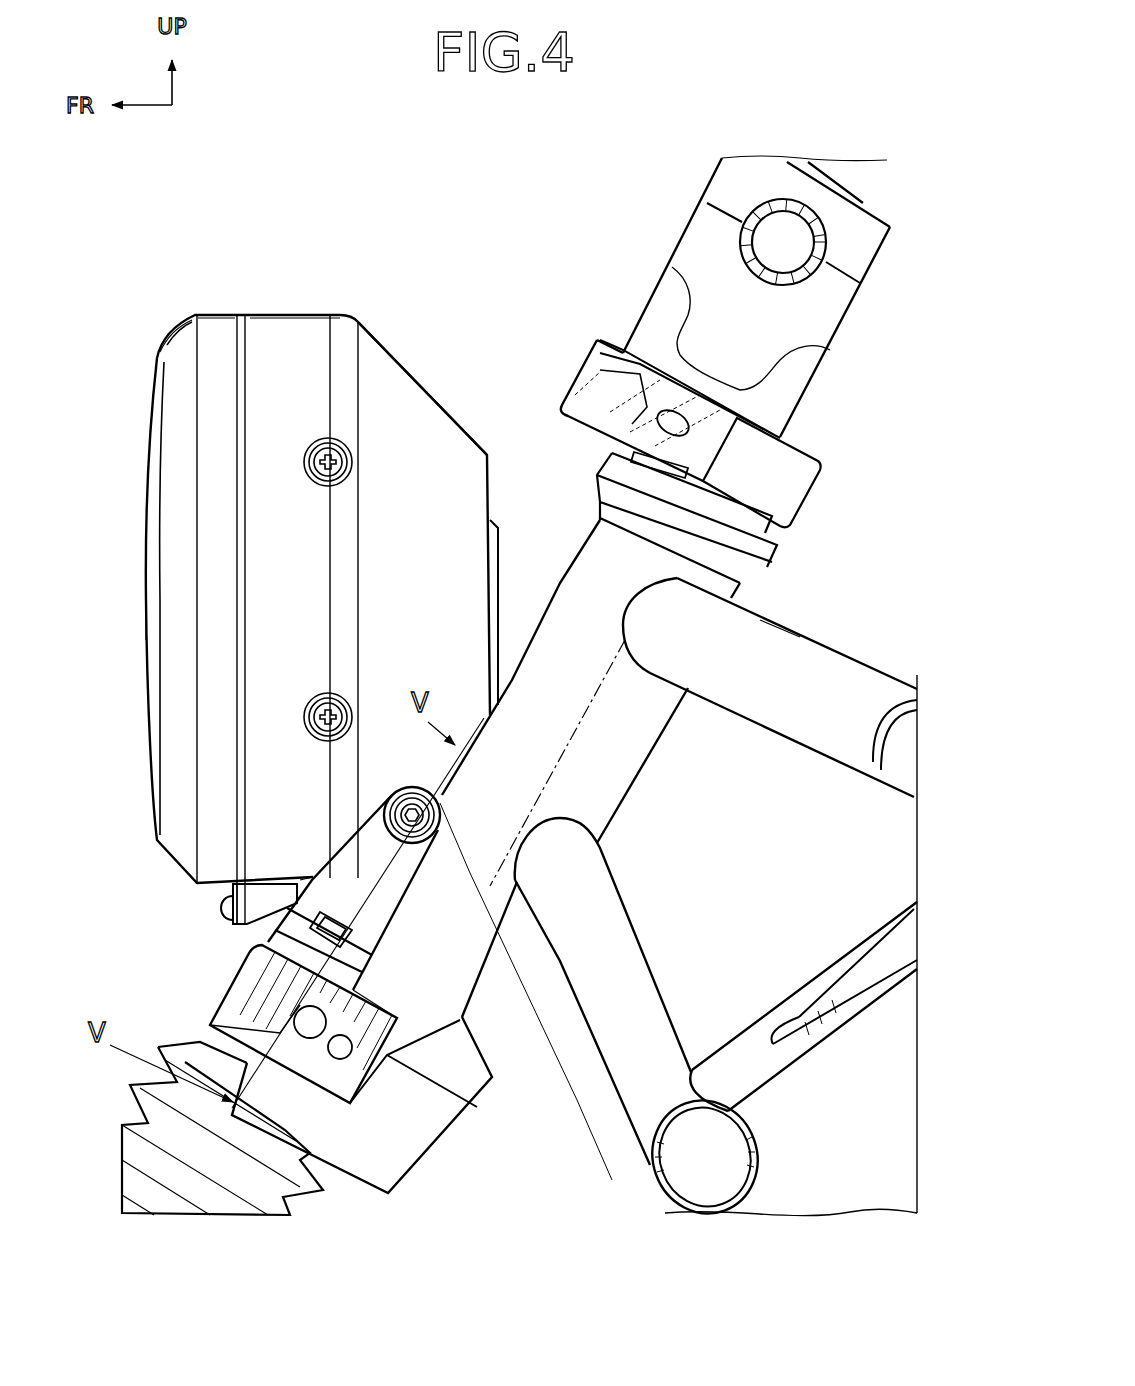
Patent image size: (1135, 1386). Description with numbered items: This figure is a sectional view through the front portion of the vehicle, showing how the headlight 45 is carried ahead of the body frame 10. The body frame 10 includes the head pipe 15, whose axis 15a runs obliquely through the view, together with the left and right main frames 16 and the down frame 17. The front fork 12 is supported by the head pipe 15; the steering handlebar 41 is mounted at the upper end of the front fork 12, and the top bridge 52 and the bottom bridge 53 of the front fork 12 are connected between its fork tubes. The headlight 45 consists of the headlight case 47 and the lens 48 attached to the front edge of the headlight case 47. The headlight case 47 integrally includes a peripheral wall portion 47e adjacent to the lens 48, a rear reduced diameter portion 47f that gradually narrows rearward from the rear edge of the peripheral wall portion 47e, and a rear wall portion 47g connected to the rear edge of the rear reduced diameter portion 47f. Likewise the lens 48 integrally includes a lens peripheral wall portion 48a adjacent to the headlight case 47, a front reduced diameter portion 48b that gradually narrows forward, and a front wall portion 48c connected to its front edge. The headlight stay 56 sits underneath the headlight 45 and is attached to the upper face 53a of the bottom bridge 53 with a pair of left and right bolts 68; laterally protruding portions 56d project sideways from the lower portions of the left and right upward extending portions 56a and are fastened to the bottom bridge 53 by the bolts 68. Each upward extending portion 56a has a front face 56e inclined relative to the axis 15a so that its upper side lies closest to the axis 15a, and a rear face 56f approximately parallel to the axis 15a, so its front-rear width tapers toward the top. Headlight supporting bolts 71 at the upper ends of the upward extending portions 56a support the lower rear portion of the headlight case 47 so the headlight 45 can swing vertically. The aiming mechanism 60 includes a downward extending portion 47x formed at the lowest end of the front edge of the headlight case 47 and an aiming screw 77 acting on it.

The body frame 10 is at (778, 612).
The front fork 12 is at (122, 1140).
The head pipe 15 is at (665, 716).
The axis of the head pipe 15a is at (603, 642).
The main frames 16 is at (862, 682).
The down frame 17 is at (710, 1190).
The steering handlebar 41 is at (783, 200).
The headlight 45 is at (183, 318).
The headlight case 47 is at (400, 362).
The peripheral wall portion 47e is at (283, 330).
The rear reduced diameter portion 47f is at (432, 413).
The rear wall portion 47g is at (498, 582).
The downward extending portion 47x is at (262, 898).
The lens 48 is at (144, 458).
The lens peripheral wall portion 48a is at (203, 313).
The front reduced diameter portion 48b is at (173, 343).
The front wall portion 48c is at (145, 583).
The top bridge 52 is at (595, 345).
The bottom bridge 53 is at (215, 992).
The upper face of the bottom bridge 53a is at (255, 942).
The headlight stay 56 is at (350, 830).
The upward extending portion 56a is at (388, 880).
The laterally protruding portion 56d is at (405, 1060).
The front face 56e is at (327, 865).
The rear face 56f is at (393, 930).
The aiming mechanism 60 is at (213, 928).
The bolts 68 is at (312, 880).
The headlight supporting bolts 71 is at (531, 1004).
The aiming screw 77 is at (212, 917).